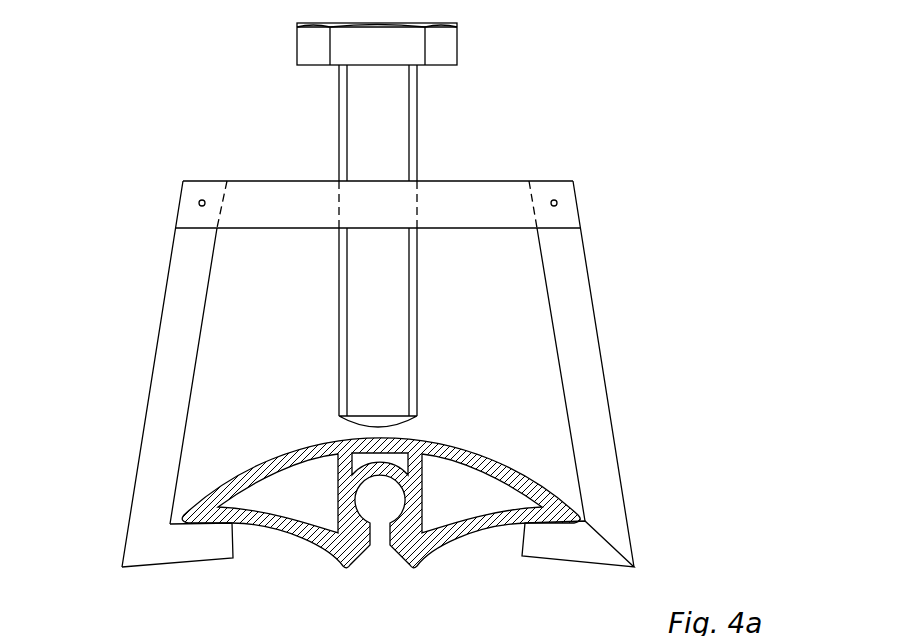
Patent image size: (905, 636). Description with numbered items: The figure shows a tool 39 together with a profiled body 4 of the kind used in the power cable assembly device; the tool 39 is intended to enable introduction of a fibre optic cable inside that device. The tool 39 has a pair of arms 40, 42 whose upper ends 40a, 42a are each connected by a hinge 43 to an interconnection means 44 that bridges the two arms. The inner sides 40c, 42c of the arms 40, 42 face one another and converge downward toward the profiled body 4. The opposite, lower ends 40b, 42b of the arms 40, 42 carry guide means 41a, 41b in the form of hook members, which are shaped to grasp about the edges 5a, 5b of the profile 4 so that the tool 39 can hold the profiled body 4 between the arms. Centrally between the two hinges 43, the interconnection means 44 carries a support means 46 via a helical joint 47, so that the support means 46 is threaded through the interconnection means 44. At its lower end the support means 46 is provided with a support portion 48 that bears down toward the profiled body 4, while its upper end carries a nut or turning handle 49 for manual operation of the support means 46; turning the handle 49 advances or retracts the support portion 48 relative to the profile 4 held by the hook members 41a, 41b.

The tool 39 is at (527, 88).
The profiled body 4 is at (486, 456).
The edge of the profile 5a is at (173, 518).
The edge of the profile 5b is at (586, 521).
The arm 40 is at (173, 322).
The end of arm 40a is at (197, 188).
The opposite end of arm 40b is at (121, 557).
The inner side of first leg 40c is at (197, 365).
The guide means 41a is at (204, 541).
The guide means 41b is at (549, 543).
The arm 42 is at (586, 322).
The end of arm 42a is at (558, 188).
The opposite end of arm 42b is at (635, 556).
The inner side of second leg 42c is at (557, 365).
The hinge 43 is at (198, 203).
The interconnection means 44 is at (470, 188).
The support means 46 is at (390, 322).
The helical joint 47 is at (345, 193).
The support portion 48 is at (349, 424).
The nut or turning handle 49 is at (443, 44).